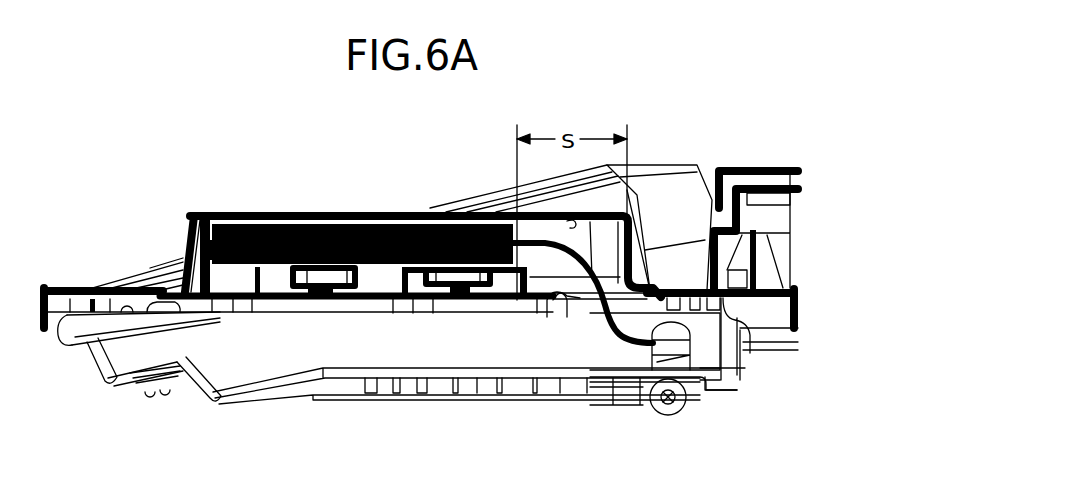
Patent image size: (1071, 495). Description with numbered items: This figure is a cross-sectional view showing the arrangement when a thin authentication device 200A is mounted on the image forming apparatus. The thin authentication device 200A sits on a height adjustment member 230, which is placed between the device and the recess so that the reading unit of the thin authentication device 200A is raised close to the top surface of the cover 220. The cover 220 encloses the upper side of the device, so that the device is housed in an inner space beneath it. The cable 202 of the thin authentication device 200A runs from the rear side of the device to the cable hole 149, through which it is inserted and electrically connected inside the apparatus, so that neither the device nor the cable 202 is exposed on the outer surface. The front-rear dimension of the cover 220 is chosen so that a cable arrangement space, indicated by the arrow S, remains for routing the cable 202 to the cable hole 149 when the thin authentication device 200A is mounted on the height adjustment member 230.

The cover 220 is at (263, 211).
The thin authentication device 200A is at (328, 222).
The cable 202 is at (606, 330).
The cable hole 149 is at (565, 296).
The height adjustment member 230 is at (400, 300).